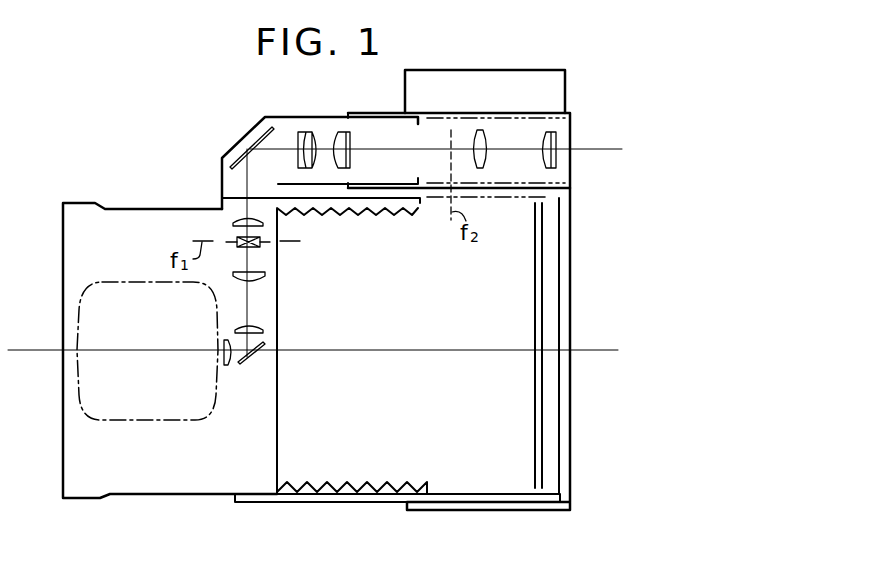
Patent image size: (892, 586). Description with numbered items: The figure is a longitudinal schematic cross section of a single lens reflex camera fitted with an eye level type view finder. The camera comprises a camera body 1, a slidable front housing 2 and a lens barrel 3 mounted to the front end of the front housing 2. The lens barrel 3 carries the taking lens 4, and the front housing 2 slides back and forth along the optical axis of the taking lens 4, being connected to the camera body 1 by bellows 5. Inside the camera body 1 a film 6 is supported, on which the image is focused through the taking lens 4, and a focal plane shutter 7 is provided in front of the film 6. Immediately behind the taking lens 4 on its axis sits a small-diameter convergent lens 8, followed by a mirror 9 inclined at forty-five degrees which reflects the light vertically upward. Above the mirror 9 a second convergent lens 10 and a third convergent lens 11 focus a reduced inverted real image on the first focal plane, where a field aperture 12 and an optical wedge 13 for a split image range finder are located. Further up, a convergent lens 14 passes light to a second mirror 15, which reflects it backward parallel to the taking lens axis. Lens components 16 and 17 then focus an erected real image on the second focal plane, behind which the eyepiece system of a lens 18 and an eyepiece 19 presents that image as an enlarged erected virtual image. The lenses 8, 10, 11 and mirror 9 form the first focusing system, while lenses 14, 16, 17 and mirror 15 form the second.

The camera body 1 is at (446, 509).
The slidable front housing 2 is at (275, 503).
The lens barrel 3 is at (126, 494).
The taking lens 4 is at (123, 421).
The bellows 5 is at (366, 482).
The film 6 is at (544, 270).
The focal plane shutter 7 is at (534, 259).
The convergent lens 8 is at (225, 366).
The mirror 9 is at (246, 357).
The second convergent lens 10 is at (264, 327).
The third convergent lens 11 is at (267, 277).
The field aperture 12 is at (262, 241).
The optical wedge 13 is at (237, 237).
The convergent lens 14 is at (264, 223).
The second mirror 15 is at (238, 153).
The lens component 16 is at (308, 140).
The lens component 17 is at (349, 139).
The lens 18 is at (479, 140).
The eyepiece 19 is at (553, 138).